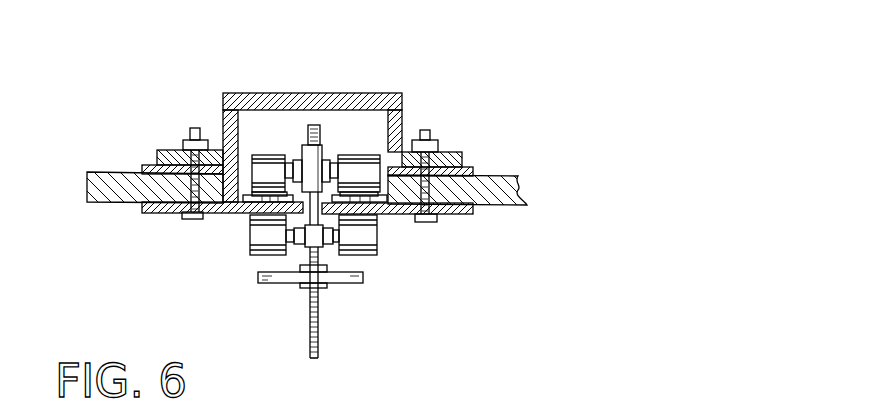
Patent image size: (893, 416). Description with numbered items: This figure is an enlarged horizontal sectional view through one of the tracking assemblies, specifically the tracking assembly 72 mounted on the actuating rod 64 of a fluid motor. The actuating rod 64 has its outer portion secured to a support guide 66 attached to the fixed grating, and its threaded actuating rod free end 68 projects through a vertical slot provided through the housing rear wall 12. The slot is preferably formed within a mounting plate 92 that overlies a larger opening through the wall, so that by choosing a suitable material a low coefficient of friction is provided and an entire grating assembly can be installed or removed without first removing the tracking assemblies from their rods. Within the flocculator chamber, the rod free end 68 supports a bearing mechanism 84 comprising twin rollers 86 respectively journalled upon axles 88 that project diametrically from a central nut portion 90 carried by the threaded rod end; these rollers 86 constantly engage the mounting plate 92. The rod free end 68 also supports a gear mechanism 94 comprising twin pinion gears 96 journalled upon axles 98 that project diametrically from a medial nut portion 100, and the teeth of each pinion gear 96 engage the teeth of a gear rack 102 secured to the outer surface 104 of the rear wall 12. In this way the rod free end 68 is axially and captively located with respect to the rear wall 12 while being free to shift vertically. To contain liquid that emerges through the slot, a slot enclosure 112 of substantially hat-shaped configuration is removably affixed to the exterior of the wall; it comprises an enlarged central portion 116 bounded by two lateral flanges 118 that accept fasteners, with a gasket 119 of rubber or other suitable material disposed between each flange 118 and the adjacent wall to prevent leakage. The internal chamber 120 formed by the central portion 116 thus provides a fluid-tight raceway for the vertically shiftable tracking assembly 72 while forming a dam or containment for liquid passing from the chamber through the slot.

The housing rear wall 12 is at (90, 180).
The actuating rod 64 is at (322, 342).
The support guide 66 is at (303, 289).
The actuating rod free end 68 is at (359, 204).
The tracking assembly 72 is at (344, 116).
The bearing mechanism 84 is at (330, 280).
The rollers 86 is at (251, 240).
The axles 88 is at (292, 246).
The central nut portion 90 is at (290, 283).
The mounting plate 92 is at (500, 206).
The gear mechanism 94 is at (285, 144).
The pinion gears 96 is at (332, 99).
The axles 98 is at (376, 129).
The medial nut portion 100 is at (327, 152).
The gear rack 102 is at (244, 200).
The outer surface 104 is at (530, 182).
The slot enclosure 112 is at (262, 88).
The enlarged central portion 116 is at (312, 124).
The lateral flanges 118 is at (462, 156).
The gasket 119 is at (142, 168).
The internal chamber 120 is at (259, 120).